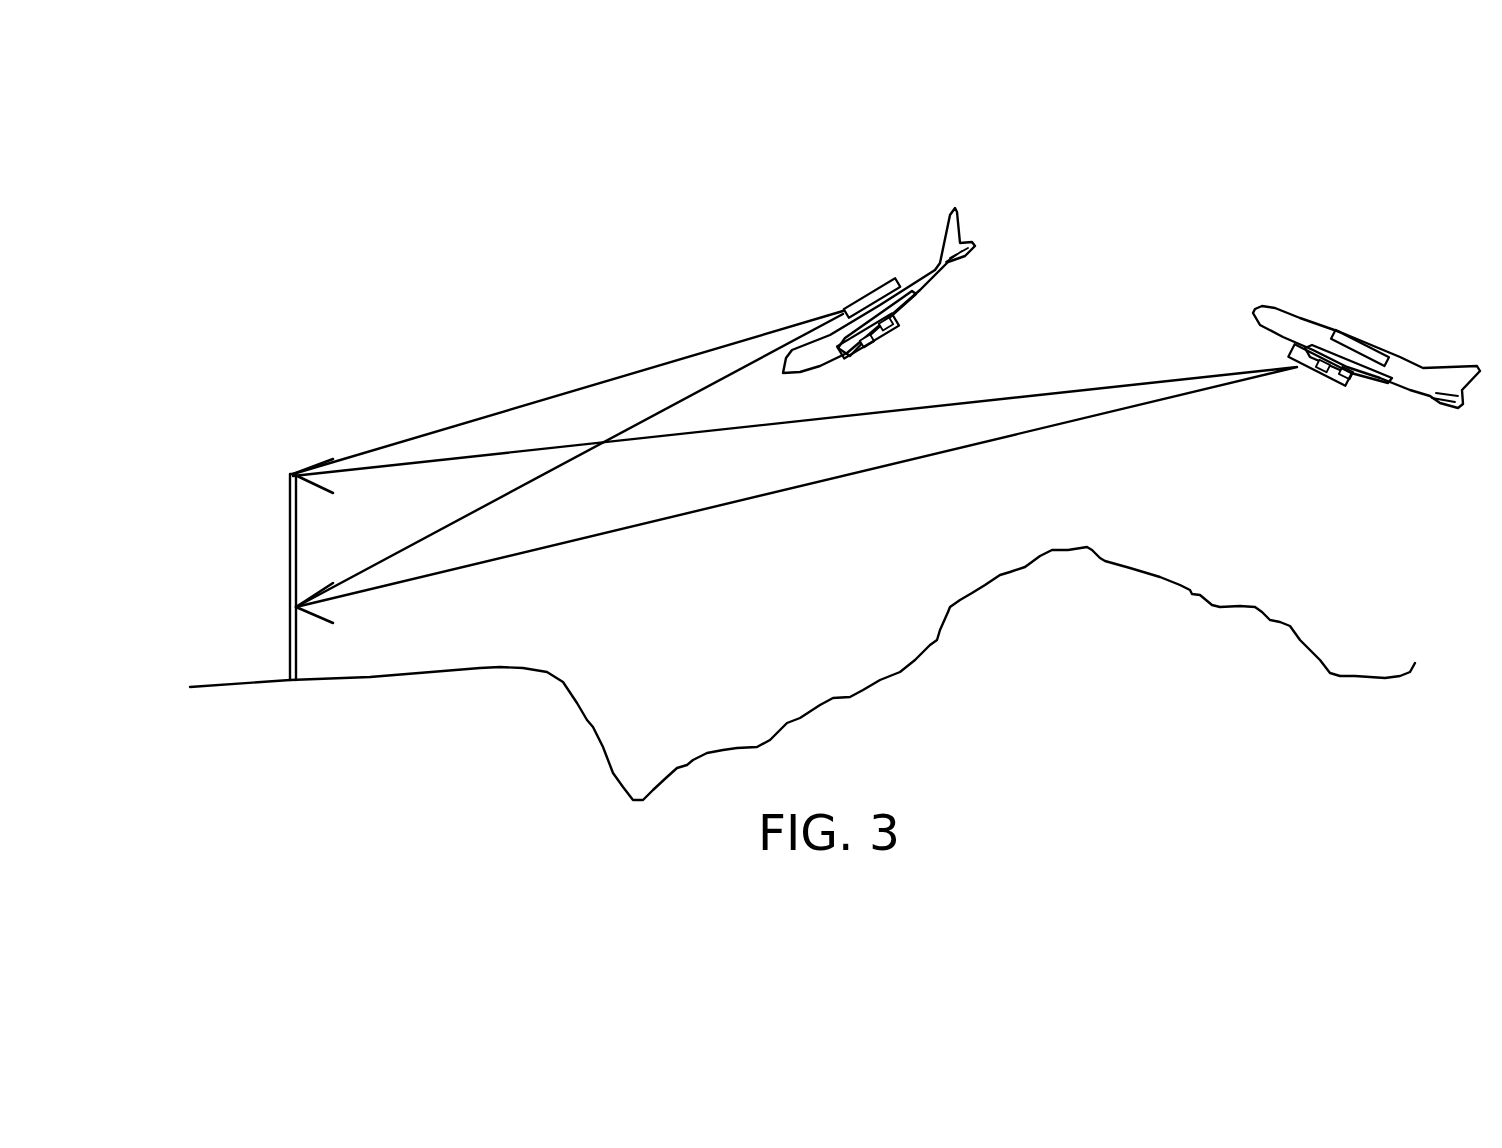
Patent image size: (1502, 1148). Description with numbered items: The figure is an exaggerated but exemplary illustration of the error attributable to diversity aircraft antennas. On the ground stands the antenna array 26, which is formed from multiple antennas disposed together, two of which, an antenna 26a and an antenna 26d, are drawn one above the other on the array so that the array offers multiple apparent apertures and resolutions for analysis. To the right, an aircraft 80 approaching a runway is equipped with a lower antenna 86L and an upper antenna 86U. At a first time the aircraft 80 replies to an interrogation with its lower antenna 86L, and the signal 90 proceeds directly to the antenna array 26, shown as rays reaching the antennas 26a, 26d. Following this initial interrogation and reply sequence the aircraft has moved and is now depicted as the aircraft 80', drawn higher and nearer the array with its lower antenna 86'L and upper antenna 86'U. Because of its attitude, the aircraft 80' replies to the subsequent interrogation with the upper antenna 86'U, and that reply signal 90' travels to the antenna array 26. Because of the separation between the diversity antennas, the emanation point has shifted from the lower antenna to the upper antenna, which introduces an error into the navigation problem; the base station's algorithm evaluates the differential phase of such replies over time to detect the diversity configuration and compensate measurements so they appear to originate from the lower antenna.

The antenna array 26 is at (266, 514).
The antenna 26a is at (295, 605).
The antenna 26d is at (295, 472).
The aircraft 80 is at (1369, 357).
The aircraft 80' is at (910, 290).
The upper antenna 86U is at (1355, 345).
The lower antenna 86L is at (1330, 377).
The upper antenna 86'U is at (836, 271).
The lower antenna 86'L is at (893, 358).
The signal 90 is at (795, 487).
The signal 90' is at (568, 453).